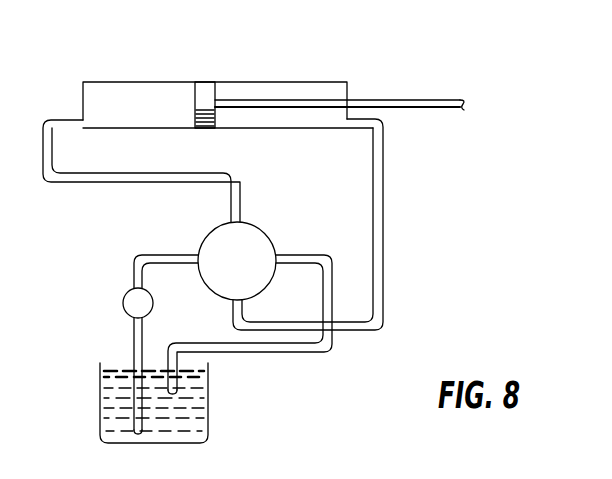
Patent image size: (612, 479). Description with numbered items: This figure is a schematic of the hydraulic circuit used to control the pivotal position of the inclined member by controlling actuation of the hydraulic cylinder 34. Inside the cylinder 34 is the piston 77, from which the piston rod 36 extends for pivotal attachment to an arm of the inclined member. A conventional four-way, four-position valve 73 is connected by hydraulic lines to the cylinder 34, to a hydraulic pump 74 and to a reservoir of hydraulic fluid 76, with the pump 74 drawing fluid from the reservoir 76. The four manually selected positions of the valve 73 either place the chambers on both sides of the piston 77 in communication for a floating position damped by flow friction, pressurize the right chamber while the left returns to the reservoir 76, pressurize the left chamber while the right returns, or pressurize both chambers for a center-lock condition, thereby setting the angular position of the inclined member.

The hydraulic cylinder 34 is at (262, 82).
The piston 77 is at (205, 90).
The piston rod 36 is at (415, 100).
The four-way, four-position valve 73 is at (268, 233).
The hydraulic pump 74 is at (123, 303).
The reservoir of hydraulic fluid 76 is at (208, 405).